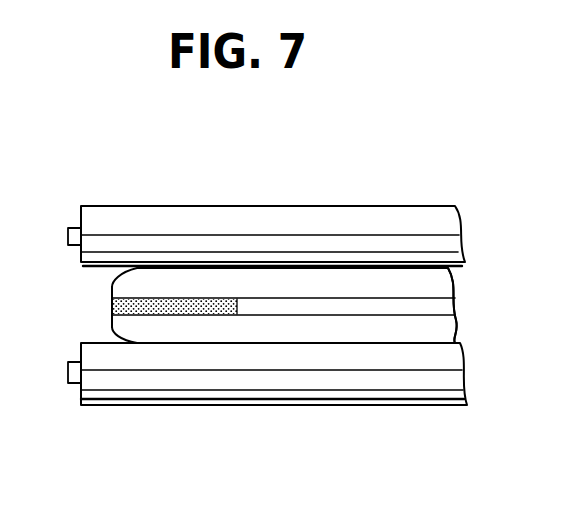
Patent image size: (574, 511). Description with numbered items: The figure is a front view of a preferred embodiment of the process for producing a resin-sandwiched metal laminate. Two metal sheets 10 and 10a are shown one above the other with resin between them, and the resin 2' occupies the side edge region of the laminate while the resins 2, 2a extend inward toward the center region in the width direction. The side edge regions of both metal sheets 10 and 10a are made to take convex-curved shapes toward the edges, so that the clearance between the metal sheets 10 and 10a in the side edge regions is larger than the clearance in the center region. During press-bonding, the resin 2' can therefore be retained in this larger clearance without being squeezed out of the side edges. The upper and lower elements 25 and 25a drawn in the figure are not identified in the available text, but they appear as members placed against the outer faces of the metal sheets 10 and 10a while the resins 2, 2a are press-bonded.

The upper rail 25 is at (287, 225).
The lower rail 25a is at (384, 385).
The metal sheet 10 is at (366, 287).
The metal sheet 10a is at (263, 328).
The resin 2 is at (175, 378).
The resin 2' is at (76, 304).
The resin 2a is at (450, 302).